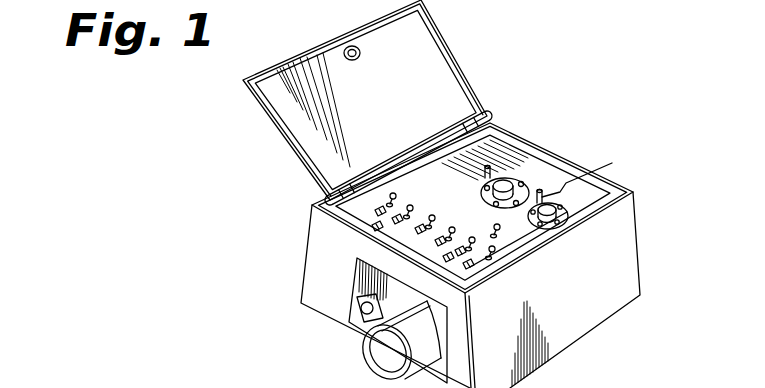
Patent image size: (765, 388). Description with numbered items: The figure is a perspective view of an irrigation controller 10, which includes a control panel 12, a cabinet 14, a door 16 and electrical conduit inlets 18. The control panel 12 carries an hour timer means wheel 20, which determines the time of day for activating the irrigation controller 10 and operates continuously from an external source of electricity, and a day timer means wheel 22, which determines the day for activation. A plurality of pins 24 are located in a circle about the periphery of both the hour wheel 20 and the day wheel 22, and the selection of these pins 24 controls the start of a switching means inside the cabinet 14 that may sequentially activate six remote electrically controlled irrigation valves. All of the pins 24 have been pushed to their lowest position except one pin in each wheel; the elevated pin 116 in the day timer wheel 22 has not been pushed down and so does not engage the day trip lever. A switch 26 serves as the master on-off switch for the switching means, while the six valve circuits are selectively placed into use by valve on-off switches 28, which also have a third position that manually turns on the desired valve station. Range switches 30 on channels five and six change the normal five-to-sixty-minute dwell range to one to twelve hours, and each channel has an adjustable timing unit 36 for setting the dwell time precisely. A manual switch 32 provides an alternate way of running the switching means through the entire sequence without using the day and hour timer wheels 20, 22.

The irrigation controller 10 is at (240, 130).
The control panel 12 is at (480, 110).
The cabinet 14 is at (600, 297).
The door 16 is at (312, 72).
The electrical conduit inlets 18 is at (362, 314).
The hour timer means wheel 20 is at (553, 222).
The day timer means wheel 22 is at (507, 177).
The pins 24 is at (488, 172).
The switch 26 is at (398, 231).
The valve on-off switches 28 is at (440, 242).
The range switches 30 is at (474, 270).
The manual switch 32 is at (507, 240).
The adjustable timing unit 36 is at (410, 205).
The pin 116 is at (612, 163).